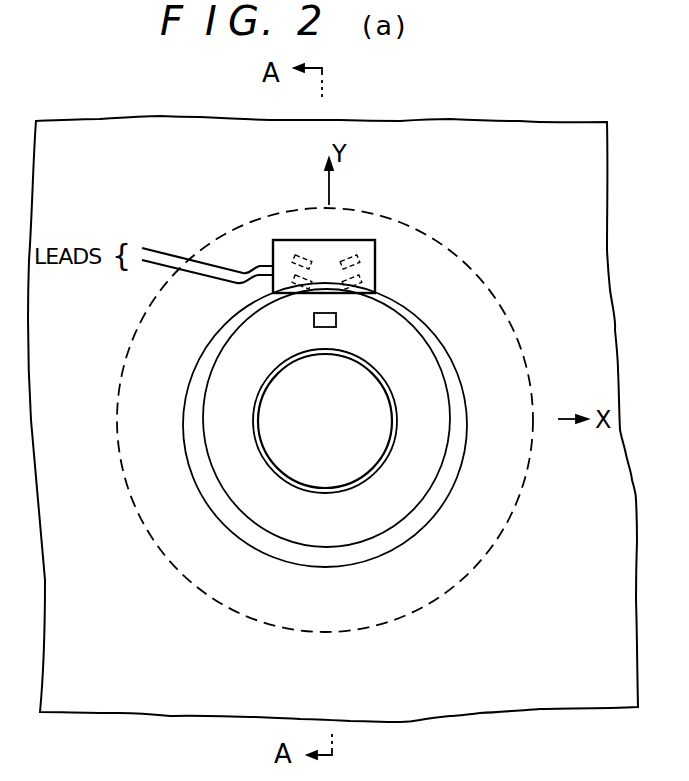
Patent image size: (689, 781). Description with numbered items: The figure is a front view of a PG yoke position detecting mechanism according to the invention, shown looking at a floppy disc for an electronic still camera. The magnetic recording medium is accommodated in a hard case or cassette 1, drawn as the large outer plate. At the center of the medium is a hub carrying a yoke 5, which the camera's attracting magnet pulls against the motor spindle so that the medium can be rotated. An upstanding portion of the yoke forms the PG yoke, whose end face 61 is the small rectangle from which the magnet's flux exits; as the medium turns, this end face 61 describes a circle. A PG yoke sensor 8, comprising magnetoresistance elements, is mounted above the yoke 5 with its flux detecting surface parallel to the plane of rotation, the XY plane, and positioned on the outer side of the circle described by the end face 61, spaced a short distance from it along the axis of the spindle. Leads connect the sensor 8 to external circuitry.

The cassette 1 is at (553, 122).
The yoke 5 is at (458, 246).
The PG yoke sensor 8 is at (375, 248).
The PG yoke end face 61 is at (336, 318).